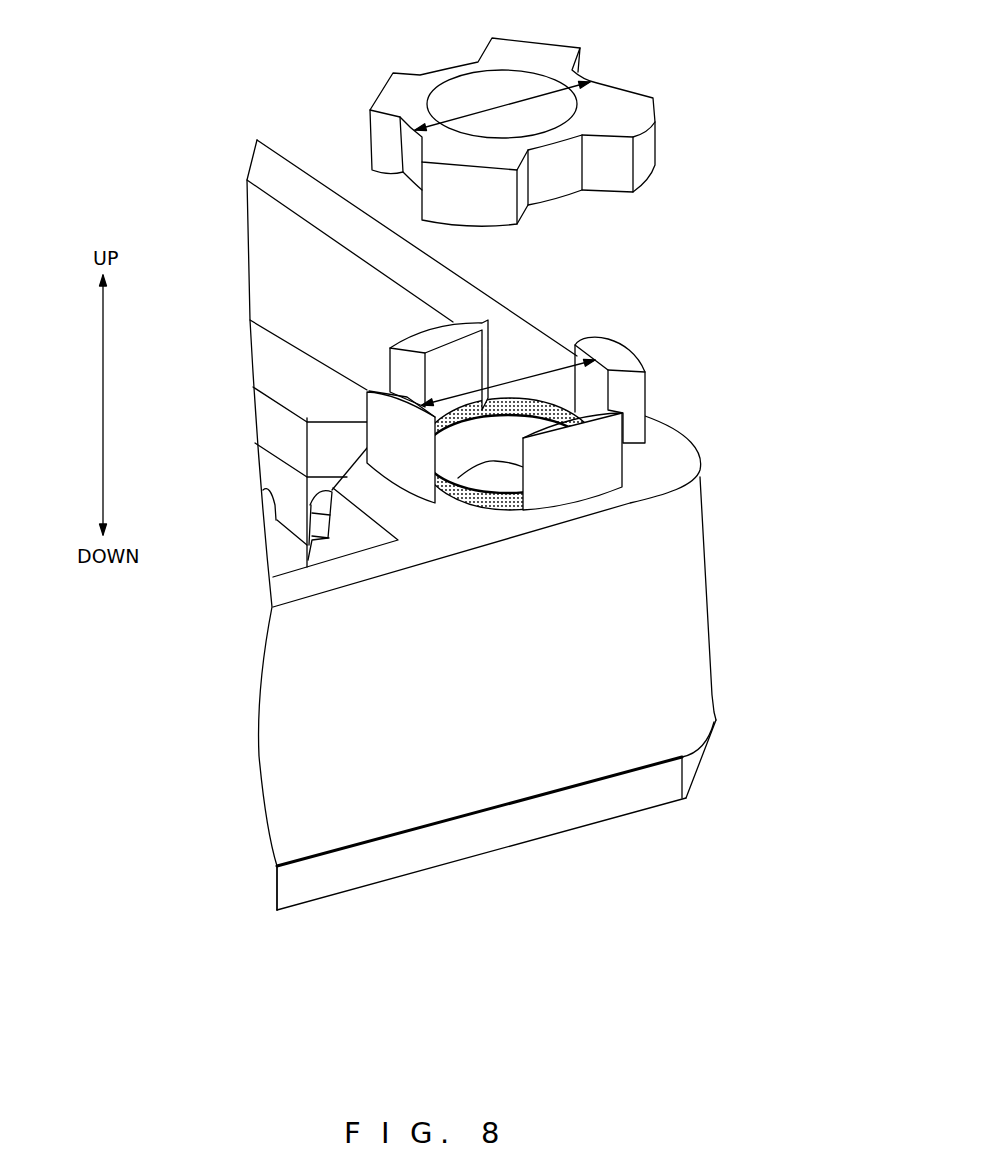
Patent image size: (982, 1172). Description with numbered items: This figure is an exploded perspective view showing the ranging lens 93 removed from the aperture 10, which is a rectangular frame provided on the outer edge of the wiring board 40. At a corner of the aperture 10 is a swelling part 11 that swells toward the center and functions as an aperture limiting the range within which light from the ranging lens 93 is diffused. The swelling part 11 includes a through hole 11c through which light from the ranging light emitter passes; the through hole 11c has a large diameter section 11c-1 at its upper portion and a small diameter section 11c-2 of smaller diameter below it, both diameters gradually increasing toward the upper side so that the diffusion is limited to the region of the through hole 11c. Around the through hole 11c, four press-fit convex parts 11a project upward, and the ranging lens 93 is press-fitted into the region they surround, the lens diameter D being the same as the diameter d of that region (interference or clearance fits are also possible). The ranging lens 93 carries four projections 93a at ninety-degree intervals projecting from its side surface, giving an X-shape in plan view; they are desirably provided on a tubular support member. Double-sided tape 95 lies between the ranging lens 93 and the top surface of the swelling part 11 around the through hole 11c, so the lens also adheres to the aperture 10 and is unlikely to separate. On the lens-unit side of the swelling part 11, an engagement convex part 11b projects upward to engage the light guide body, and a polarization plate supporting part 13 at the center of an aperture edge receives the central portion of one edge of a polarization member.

The ranging lens 93 is at (515, 132).
The projections 93a is at (487, 43).
The swelling part 11 is at (481, 545).
The press-fit convex parts 11a is at (478, 327).
The engagement convex part 11b is at (320, 507).
The through hole 11c is at (609, 358).
The large diameter section 11c-1 is at (493, 427).
The small diameter section 11c-2 is at (502, 470).
The polarization plate supporting part 13 is at (262, 360).
The double-sided tape 95 is at (573, 412).
The aperture 10 is at (549, 793).
The wiring board 40 is at (489, 842).